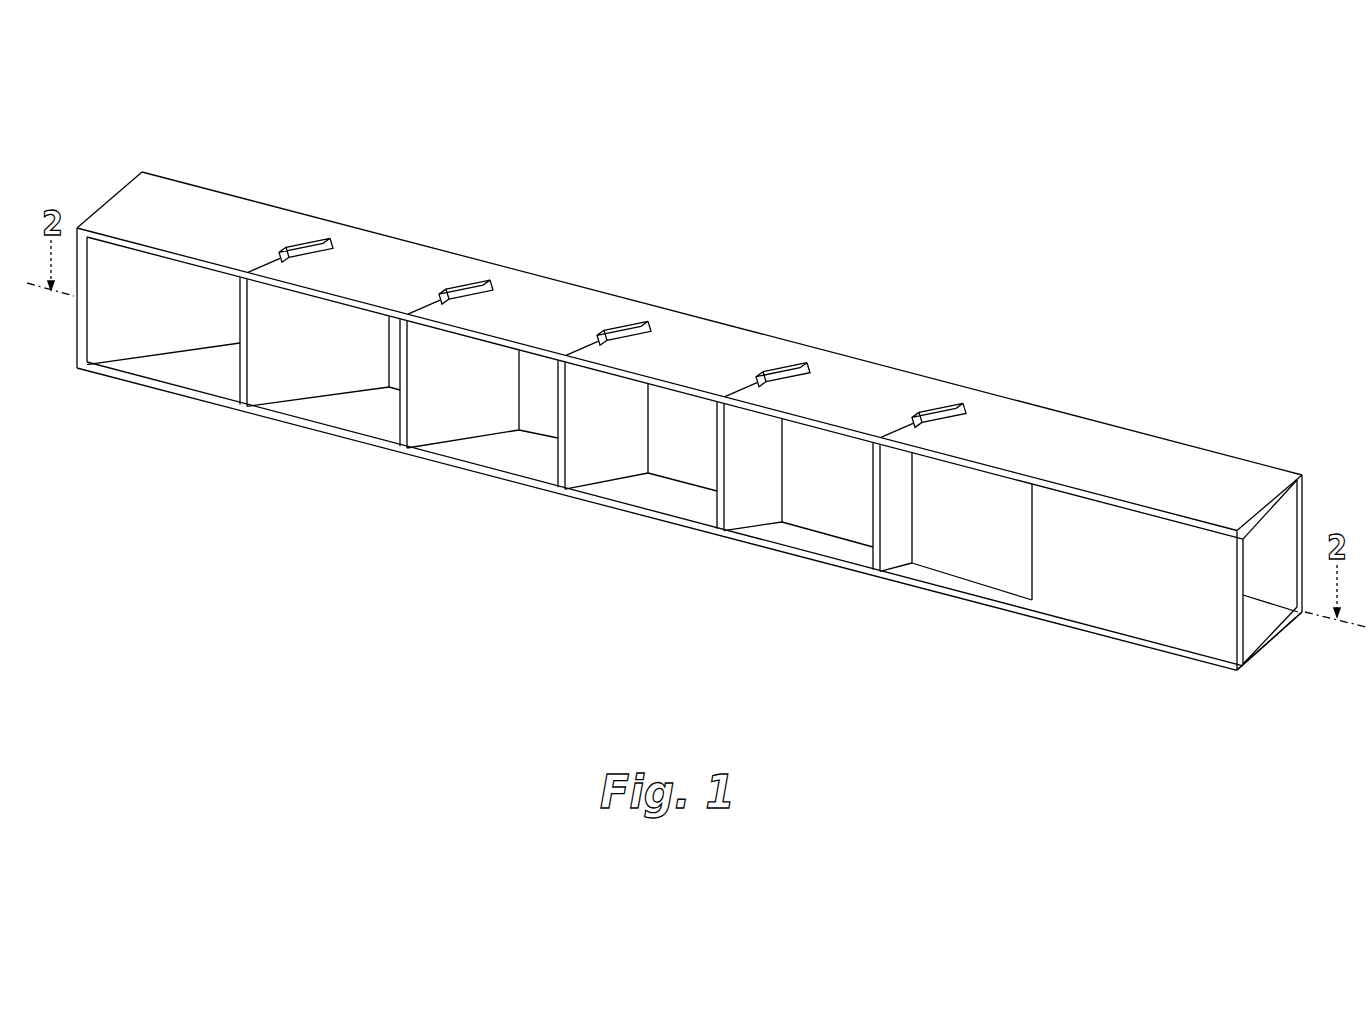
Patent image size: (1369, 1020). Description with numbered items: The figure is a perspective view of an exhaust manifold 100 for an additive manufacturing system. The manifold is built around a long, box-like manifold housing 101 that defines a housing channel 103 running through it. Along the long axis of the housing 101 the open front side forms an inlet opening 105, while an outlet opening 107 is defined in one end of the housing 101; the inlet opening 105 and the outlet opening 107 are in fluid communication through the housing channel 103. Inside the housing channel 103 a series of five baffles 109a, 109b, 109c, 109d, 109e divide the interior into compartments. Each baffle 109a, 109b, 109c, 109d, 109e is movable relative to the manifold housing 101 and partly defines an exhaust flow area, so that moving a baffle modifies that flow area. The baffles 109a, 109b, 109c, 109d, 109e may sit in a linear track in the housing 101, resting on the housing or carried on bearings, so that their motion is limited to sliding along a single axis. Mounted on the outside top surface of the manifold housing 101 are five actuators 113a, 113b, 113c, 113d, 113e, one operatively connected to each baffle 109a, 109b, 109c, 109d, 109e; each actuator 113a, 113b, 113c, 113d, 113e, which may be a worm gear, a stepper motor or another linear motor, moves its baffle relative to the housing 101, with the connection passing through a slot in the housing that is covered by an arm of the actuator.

The exhaust manifold 100 is at (1117, 131).
The manifold housing 101 is at (238, 220).
The housing channel 103 is at (1311, 524).
The inlet opening 105 is at (203, 401).
The outlet opening 107 is at (1258, 652).
The baffle 109a is at (309, 368).
The baffle 109b is at (468, 404).
The baffle 109c is at (613, 451).
The baffle 109d is at (762, 491).
The baffle 109e is at (900, 533).
The actuator 113a is at (312, 243).
The actuator 113b is at (472, 285).
The actuator 113c is at (630, 328).
The actuator 113d is at (790, 370).
The actuator 113e is at (947, 410).